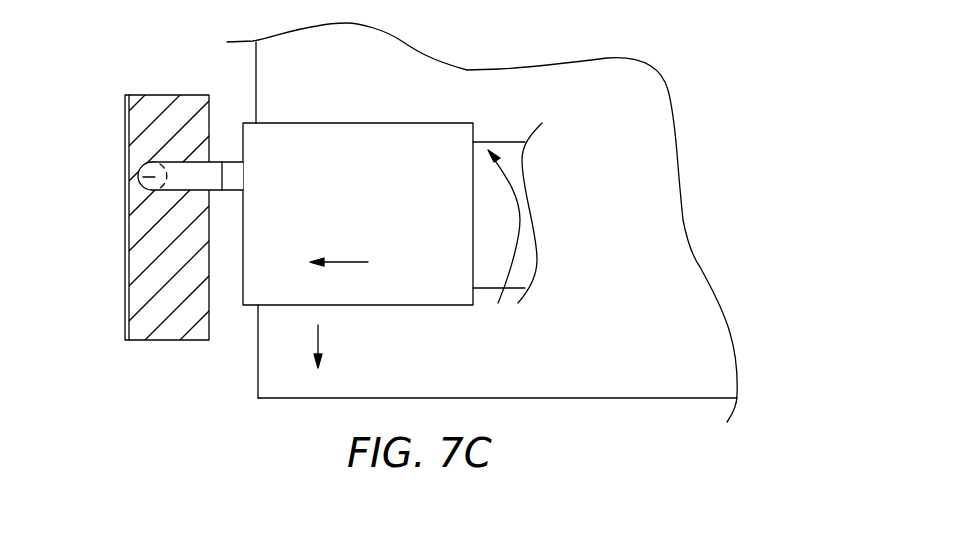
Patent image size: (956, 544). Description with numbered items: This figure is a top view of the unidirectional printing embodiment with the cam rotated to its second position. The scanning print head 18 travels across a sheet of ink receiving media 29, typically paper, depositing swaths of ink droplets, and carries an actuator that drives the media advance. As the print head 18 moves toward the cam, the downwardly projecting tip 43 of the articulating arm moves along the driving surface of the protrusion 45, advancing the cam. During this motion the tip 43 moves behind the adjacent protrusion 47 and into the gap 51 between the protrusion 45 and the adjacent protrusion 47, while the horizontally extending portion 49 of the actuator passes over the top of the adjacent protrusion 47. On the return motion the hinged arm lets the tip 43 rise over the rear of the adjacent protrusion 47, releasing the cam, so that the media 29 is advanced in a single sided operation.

The print head 18 is at (370, 210).
The ink receiving media 29 is at (278, 387).
The downwardly projecting tip 43 is at (124, 175).
The protrusion 45 is at (163, 122).
The adjacent protrusion 47 is at (135, 223).
The horizontally extending portion 49 is at (173, 181).
The gap 51 is at (193, 140).